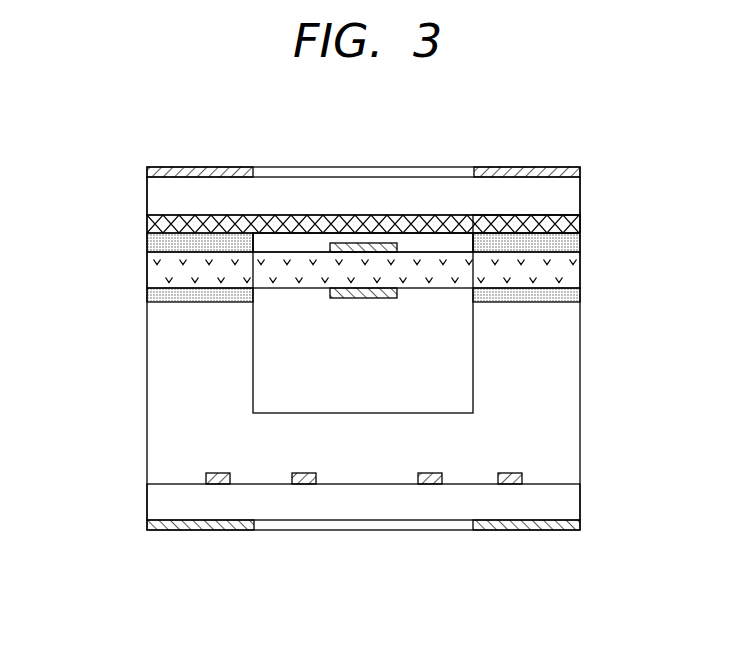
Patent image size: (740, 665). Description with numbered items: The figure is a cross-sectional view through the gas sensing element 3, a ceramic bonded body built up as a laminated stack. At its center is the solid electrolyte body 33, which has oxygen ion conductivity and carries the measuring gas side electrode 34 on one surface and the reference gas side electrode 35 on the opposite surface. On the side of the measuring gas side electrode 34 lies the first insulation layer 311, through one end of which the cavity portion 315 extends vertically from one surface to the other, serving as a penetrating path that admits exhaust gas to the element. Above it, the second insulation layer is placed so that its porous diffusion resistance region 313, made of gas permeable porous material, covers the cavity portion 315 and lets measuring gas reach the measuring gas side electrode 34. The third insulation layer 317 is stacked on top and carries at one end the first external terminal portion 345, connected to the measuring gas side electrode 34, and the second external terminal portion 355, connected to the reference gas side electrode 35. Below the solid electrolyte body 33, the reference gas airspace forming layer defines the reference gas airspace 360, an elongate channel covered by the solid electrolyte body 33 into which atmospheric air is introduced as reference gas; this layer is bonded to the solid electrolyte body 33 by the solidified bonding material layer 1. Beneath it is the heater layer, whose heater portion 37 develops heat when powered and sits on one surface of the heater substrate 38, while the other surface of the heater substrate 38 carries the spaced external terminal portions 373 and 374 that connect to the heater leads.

The gas sensing element 3 is at (578, 150).
The bonding material layer 1 is at (167, 293).
The solid electrolyte body 33 is at (555, 275).
The measuring gas side electrode 34 is at (352, 243).
The reference gas side electrode 35 is at (350, 304).
The heater portion 37 is at (212, 476).
The heater substrate 38 is at (314, 500).
The first insulation layer 311 is at (570, 229).
The porous diffusion resistance region 313 is at (165, 225).
The cavity portion 315 is at (443, 247).
The third insulation layer 317 is at (292, 192).
The first external terminal portion 345 is at (198, 167).
The second external terminal portion 355 is at (520, 167).
The reference gas airspace 360 is at (432, 413).
The external terminal portion 373 is at (200, 530).
The external terminal portion 374 is at (527, 530).